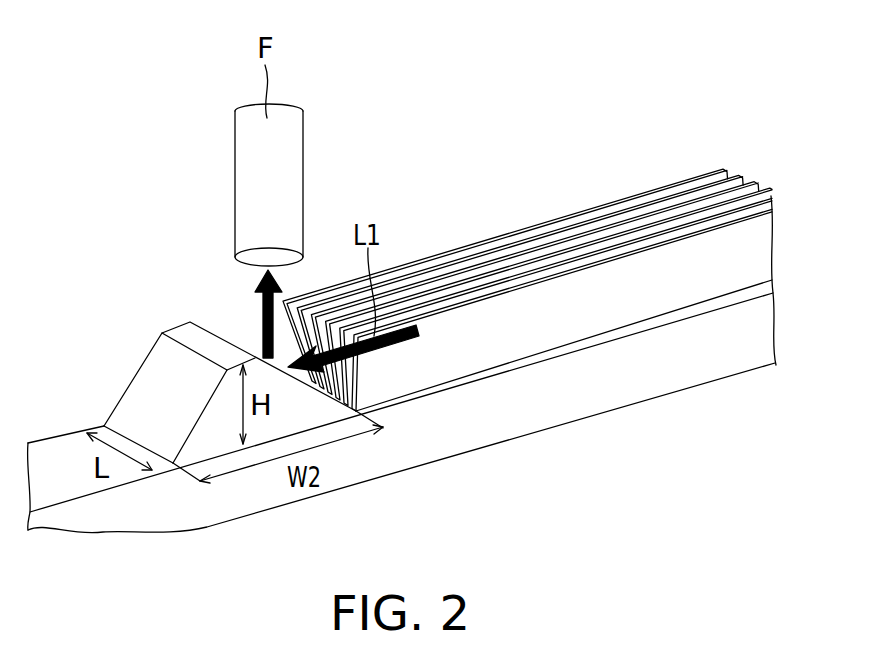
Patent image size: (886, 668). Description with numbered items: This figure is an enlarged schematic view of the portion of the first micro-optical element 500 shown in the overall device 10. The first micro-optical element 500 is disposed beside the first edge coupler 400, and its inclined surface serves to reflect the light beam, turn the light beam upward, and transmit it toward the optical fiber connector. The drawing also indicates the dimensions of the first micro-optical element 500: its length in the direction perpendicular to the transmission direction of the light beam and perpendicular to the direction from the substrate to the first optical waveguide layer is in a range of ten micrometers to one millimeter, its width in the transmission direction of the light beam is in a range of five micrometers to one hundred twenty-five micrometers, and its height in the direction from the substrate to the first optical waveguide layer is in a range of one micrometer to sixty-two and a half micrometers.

The base plate / substrate 10 is at (788, 539).
The first edge coupler 400 is at (627, 215).
The first micro-optical element 500 is at (152, 388).